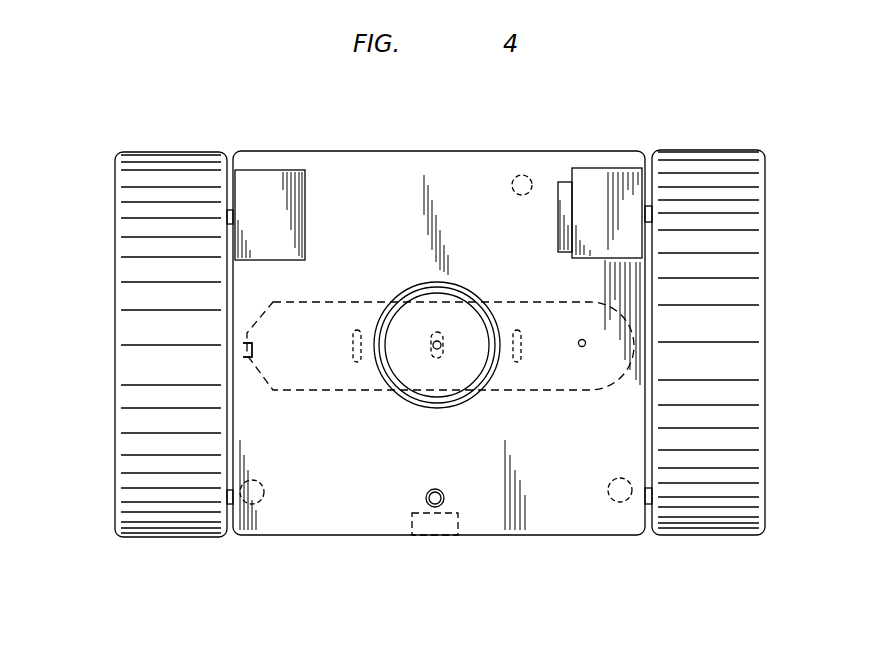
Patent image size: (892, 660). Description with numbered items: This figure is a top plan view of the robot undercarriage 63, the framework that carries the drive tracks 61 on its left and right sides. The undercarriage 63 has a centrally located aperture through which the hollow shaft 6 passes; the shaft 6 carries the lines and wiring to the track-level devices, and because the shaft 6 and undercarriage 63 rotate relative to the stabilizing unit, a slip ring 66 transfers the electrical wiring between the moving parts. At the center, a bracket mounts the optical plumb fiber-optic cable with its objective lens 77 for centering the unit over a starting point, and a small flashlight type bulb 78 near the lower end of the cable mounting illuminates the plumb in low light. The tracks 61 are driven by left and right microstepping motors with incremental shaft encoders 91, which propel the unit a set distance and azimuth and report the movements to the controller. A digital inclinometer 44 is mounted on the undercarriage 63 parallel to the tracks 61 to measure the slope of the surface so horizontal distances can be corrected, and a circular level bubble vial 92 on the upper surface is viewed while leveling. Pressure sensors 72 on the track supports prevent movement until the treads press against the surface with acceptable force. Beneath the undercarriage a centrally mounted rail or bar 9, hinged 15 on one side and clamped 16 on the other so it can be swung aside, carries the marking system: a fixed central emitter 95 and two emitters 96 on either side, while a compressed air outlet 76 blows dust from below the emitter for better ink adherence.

The shaft 6 is at (417, 405).
The rail or bar 9 is at (562, 380).
The hinge 15 is at (583, 347).
The clamp 16 is at (240, 360).
The digital inclinometer 44 is at (562, 192).
The drive tracks 61 is at (158, 535).
The undercarriage 63 is at (628, 535).
The slip ring 66 is at (420, 283).
The pressure sensors 72 is at (241, 535).
The outlet 76 is at (452, 525).
The objective lens 77 is at (438, 340).
The flashlight type bulb 78 is at (525, 175).
The microstepping motors and incremental shaft encoders 91 is at (612, 183).
The circular level bubble vial 92 is at (440, 506).
The central emitter or jet 95 is at (441, 352).
The emitters 96 is at (357, 365).